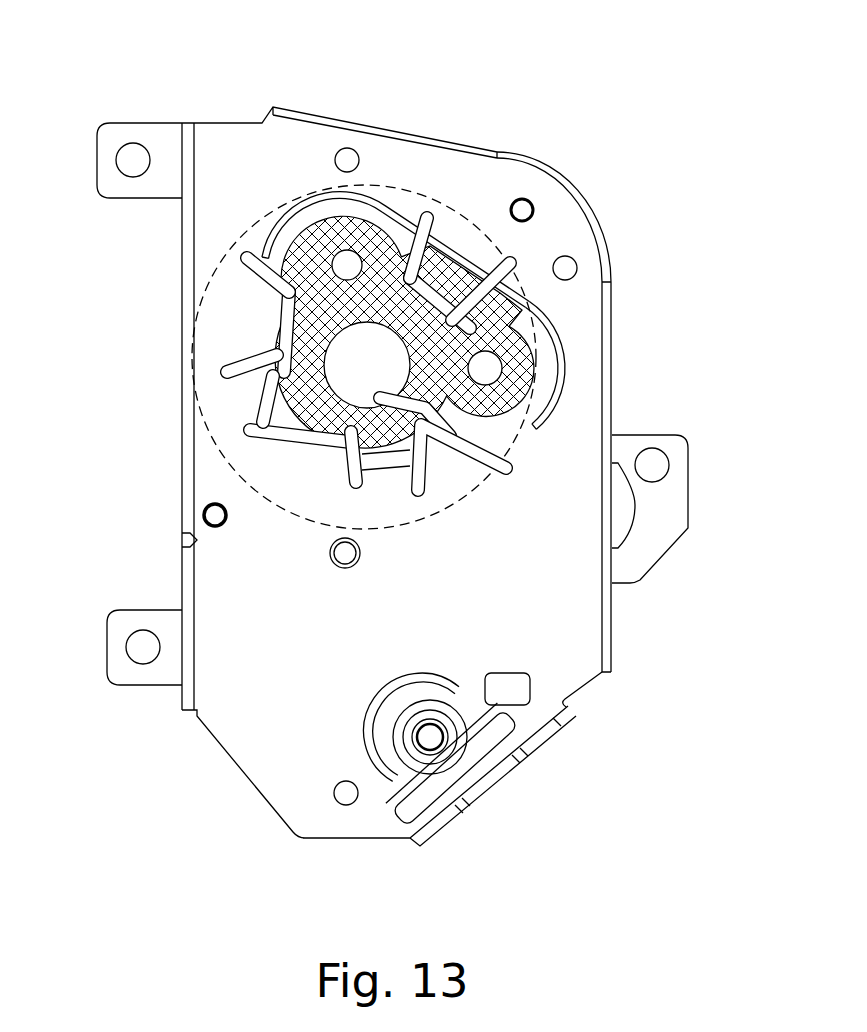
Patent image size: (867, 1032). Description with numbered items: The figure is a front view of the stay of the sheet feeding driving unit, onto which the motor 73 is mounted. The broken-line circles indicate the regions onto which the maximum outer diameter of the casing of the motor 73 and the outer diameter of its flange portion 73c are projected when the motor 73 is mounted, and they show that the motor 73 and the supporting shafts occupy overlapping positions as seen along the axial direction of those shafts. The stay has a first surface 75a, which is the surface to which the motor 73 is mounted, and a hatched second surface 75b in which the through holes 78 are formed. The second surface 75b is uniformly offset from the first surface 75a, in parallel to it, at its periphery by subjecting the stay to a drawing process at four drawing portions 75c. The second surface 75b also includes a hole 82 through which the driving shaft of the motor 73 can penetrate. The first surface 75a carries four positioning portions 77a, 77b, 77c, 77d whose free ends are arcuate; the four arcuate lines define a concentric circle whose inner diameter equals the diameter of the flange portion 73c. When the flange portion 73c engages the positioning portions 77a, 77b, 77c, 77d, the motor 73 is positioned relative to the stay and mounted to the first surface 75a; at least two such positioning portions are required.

The motor 73 is at (222, 276).
The flange portion 73c is at (465, 405).
The first surface 75a is at (245, 157).
The second surface 75b is at (550, 353).
The drawing portions 75c is at (340, 203).
The positioning portion 77a is at (460, 285).
The positioning portion 77b is at (274, 357).
The positioning portion 77c is at (347, 443).
The positioning portion 77d is at (447, 427).
The through holes 78 is at (400, 240).
The hole 82 is at (362, 408).